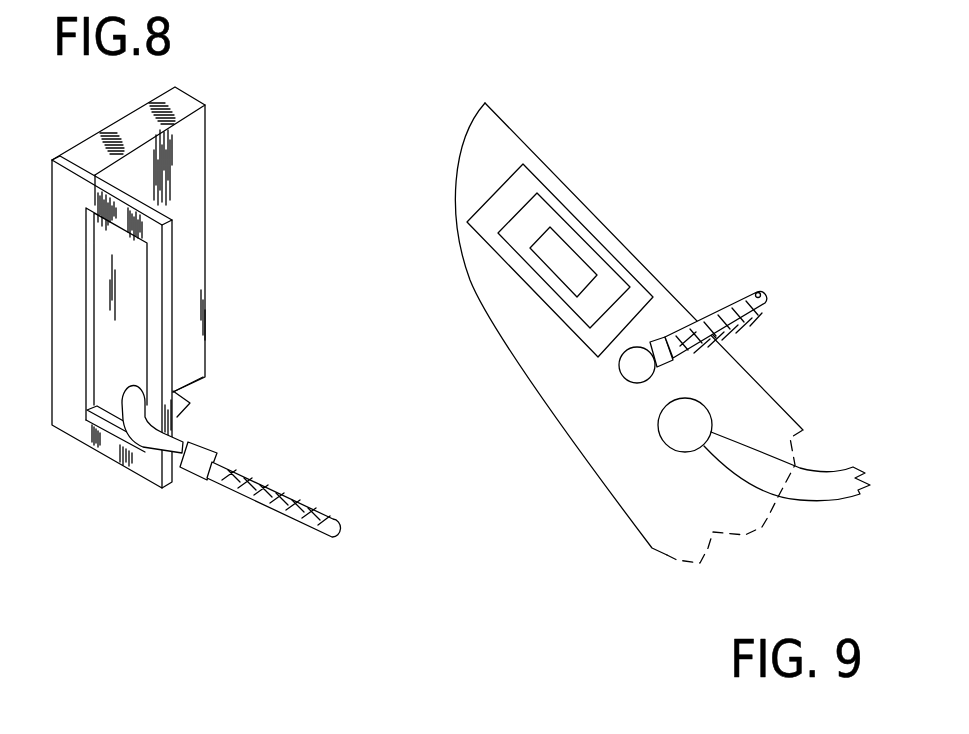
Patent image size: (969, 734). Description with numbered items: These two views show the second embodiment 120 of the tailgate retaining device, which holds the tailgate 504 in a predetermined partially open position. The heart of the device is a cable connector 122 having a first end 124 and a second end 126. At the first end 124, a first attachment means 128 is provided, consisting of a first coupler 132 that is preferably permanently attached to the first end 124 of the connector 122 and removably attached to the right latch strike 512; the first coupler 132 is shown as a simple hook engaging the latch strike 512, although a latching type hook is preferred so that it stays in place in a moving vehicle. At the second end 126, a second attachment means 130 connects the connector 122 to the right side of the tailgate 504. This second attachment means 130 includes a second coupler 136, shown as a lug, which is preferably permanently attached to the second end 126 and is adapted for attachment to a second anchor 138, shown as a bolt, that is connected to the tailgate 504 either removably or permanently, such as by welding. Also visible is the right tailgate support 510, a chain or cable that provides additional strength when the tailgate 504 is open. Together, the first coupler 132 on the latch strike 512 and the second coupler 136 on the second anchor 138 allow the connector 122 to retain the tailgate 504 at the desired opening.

In FIG. 8, the second embodiment 120 is at (237, 428).
In FIG. 9, the second embodiment 120 is at (763, 298).
In FIG. 8, the cable connector 122 is at (285, 498).
In FIG. 9, the cable connector 122 is at (723, 330).
In FIG. 8, the first end 124 is at (228, 438).
In FIG. 8, the second end 126 is at (152, 419).
In FIG. 9, the second end 126 is at (713, 335).
In FIG. 8, the first attachment means 128 is at (190, 502).
In FIG. 9, the second attachment means 130 is at (622, 408).
In FIG. 8, the first coupler 132 is at (157, 453).
In FIG. 9, the second coupler 136 is at (653, 340).
In FIG. 9, the second anchor 138 is at (627, 382).
In FIG. 9, the tailgate 504 is at (530, 152).
In FIG. 9, the right tailgate support 510 is at (800, 502).
In FIG. 8, the right latch strike 512 is at (73, 438).